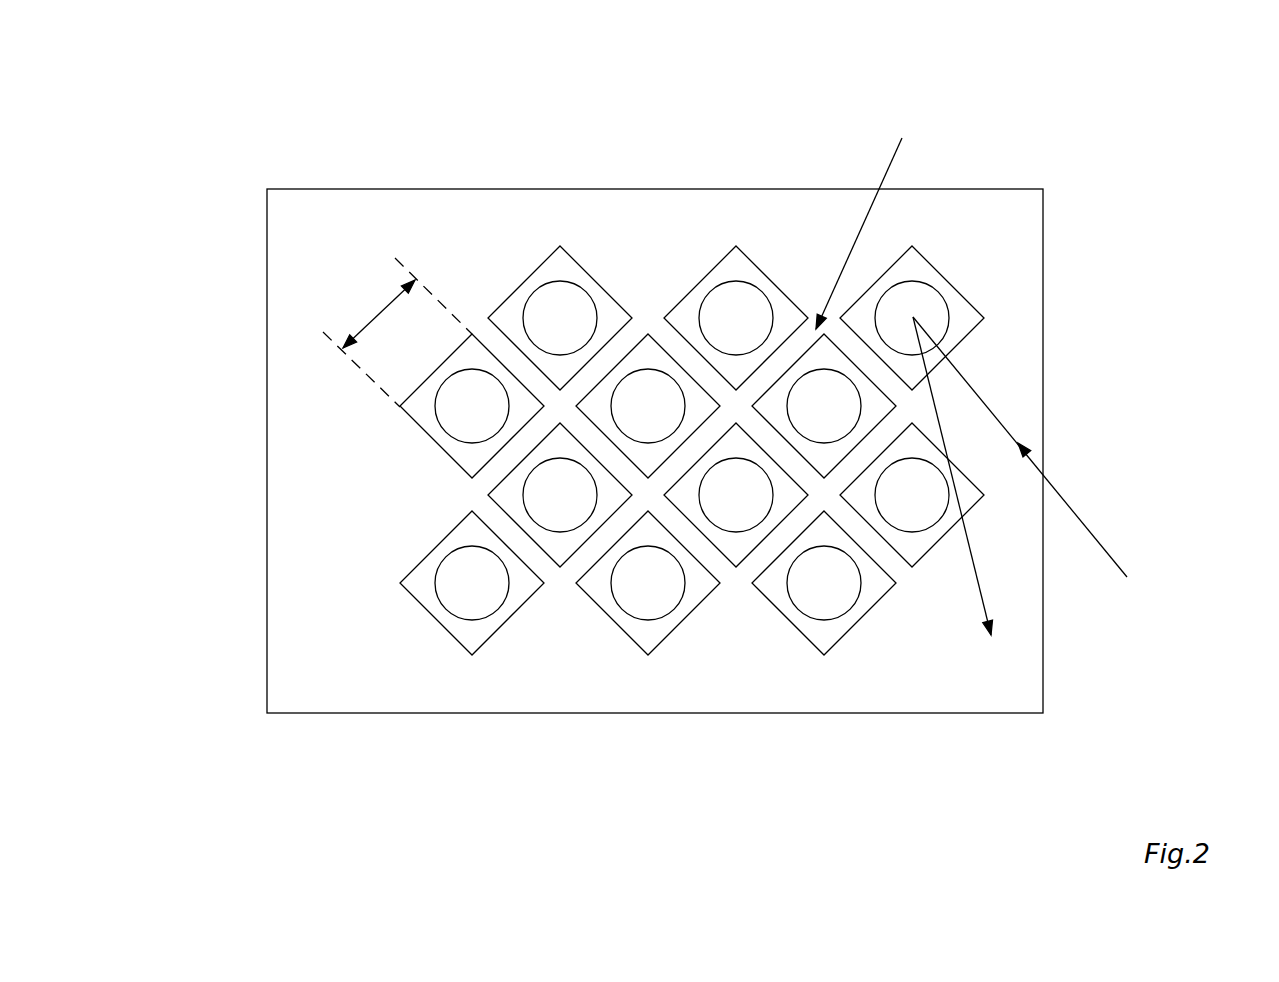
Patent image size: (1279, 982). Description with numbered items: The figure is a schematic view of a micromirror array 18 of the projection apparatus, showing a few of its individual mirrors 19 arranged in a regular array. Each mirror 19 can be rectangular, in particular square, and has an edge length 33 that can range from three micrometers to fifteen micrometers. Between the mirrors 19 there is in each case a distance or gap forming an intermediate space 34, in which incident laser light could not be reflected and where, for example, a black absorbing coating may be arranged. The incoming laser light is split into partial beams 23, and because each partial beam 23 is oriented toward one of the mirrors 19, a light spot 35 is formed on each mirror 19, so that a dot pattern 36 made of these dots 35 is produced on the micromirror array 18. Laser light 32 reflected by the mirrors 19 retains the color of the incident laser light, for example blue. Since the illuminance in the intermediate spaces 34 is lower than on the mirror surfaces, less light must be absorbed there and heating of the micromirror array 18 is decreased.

The micromirror array 18 is at (267, 317).
The mirror 19 is at (598, 284).
The light spot 35 is at (530, 297).
The edge length 33 is at (375, 313).
The intermediate space 34 is at (866, 217).
The partial beam 23 is at (1076, 513).
The laser light 32 is at (977, 574).
The dot pattern 36 is at (297, 598).